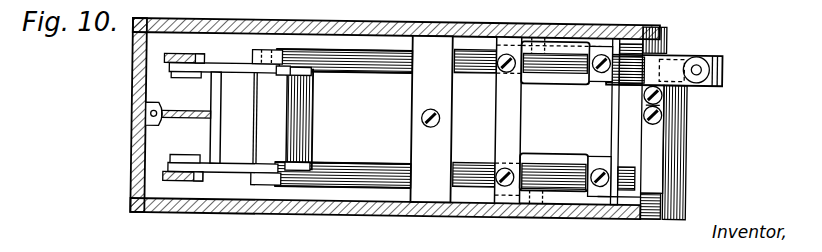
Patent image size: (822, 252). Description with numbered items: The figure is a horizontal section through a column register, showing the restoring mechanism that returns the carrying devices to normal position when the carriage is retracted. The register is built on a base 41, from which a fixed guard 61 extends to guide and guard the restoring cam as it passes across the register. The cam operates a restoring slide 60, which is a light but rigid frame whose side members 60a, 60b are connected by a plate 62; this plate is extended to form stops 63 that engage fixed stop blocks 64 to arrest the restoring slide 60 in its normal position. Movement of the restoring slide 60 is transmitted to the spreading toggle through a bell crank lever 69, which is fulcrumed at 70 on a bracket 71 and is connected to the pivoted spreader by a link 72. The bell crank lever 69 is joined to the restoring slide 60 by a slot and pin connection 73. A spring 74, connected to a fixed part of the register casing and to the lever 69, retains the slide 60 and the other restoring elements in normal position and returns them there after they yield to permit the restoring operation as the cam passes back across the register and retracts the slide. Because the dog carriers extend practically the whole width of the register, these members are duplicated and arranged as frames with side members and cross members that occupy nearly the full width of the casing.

The base 41 is at (373, 192).
The restoring slide 60 is at (700, 49).
The side member of restoring slide 60a is at (377, 64).
The side member of restoring slide 60b is at (368, 150).
The fixed guard 61 is at (723, 55).
The plate 62 is at (503, 117).
The stops 63 is at (507, 38).
The fixed stop blocks 64 is at (568, 37).
The bell crank lever 69 is at (232, 171).
The fulcrum 70 is at (260, 185).
The bracket 71 is at (286, 119).
The link 72 is at (180, 55).
The slot and pin connection 73 is at (255, 48).
The spring 74 is at (190, 108).